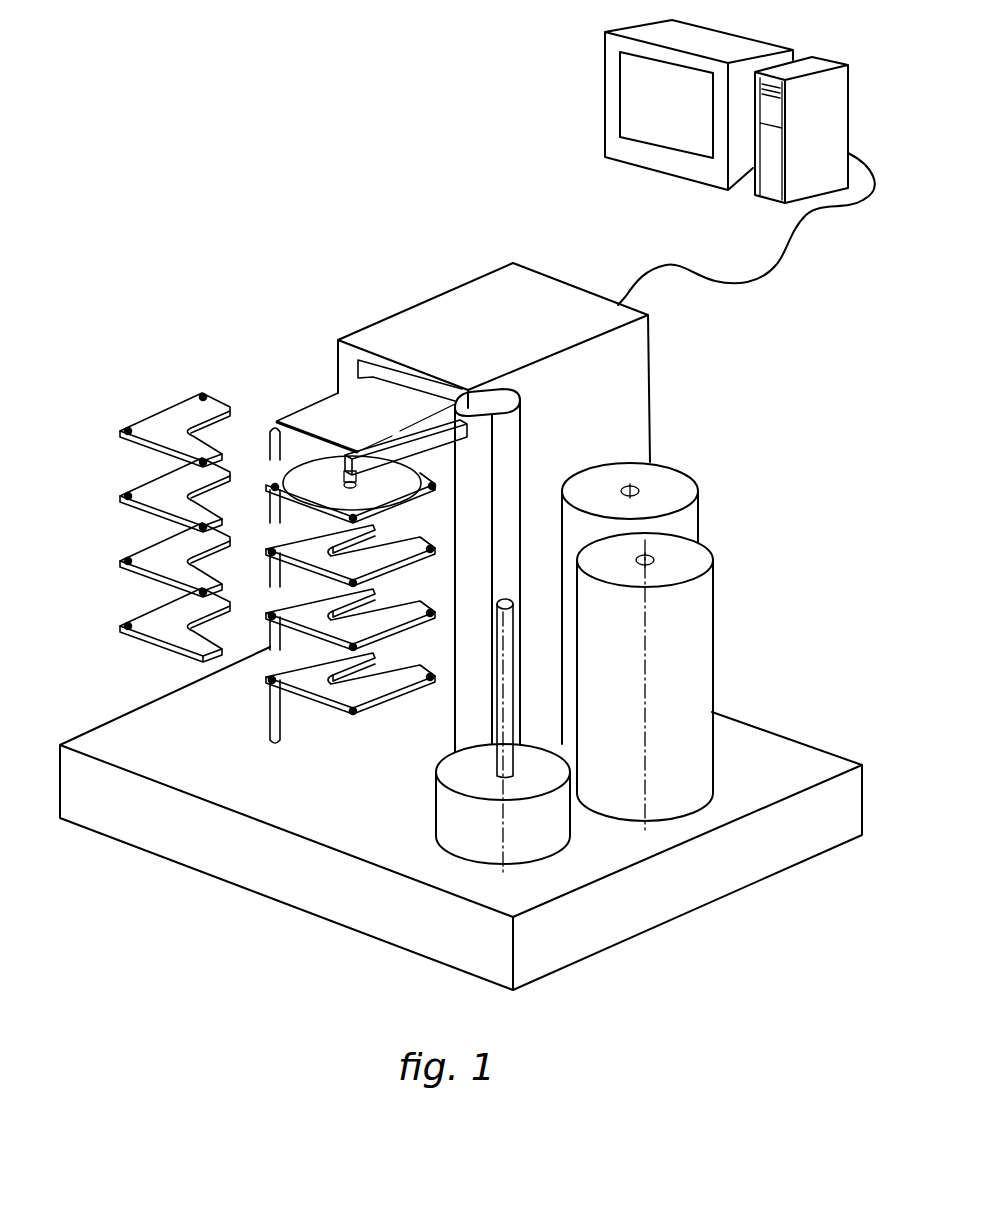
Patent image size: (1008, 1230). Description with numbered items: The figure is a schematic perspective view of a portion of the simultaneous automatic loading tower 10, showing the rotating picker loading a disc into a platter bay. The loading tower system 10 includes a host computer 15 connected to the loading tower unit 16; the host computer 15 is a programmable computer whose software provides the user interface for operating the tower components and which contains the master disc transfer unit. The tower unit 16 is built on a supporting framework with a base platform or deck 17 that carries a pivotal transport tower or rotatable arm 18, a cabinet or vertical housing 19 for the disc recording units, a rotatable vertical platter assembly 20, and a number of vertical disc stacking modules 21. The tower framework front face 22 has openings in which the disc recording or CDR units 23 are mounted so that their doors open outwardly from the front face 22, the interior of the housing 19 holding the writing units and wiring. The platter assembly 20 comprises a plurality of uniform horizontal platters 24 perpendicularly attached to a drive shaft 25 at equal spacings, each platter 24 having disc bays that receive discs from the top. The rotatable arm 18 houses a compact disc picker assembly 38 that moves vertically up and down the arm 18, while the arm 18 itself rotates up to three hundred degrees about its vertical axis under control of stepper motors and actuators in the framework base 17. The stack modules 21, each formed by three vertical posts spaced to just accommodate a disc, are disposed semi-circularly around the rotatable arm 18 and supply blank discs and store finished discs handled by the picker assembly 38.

The simultaneous automatic loading tower 10 is at (327, 18).
The host computer 15 is at (795, 227).
The loading tower unit 16 is at (655, 880).
The base platform or deck 17 is at (513, 878).
The pivotal transport tower (rotatable arm) 18 is at (522, 433).
The cabinet or vertical housing 19 is at (408, 322).
The rotatable vertical platter assembly 20 is at (275, 613).
The vertical disc stacking modules 21 is at (550, 792).
The tower framework front face 22 is at (347, 365).
The disc recording or CDR units 23 is at (345, 408).
The horizontal platters 24 is at (153, 428).
The drive shaft 25 is at (262, 425).
The compact disc picker assembly 38 is at (408, 442).